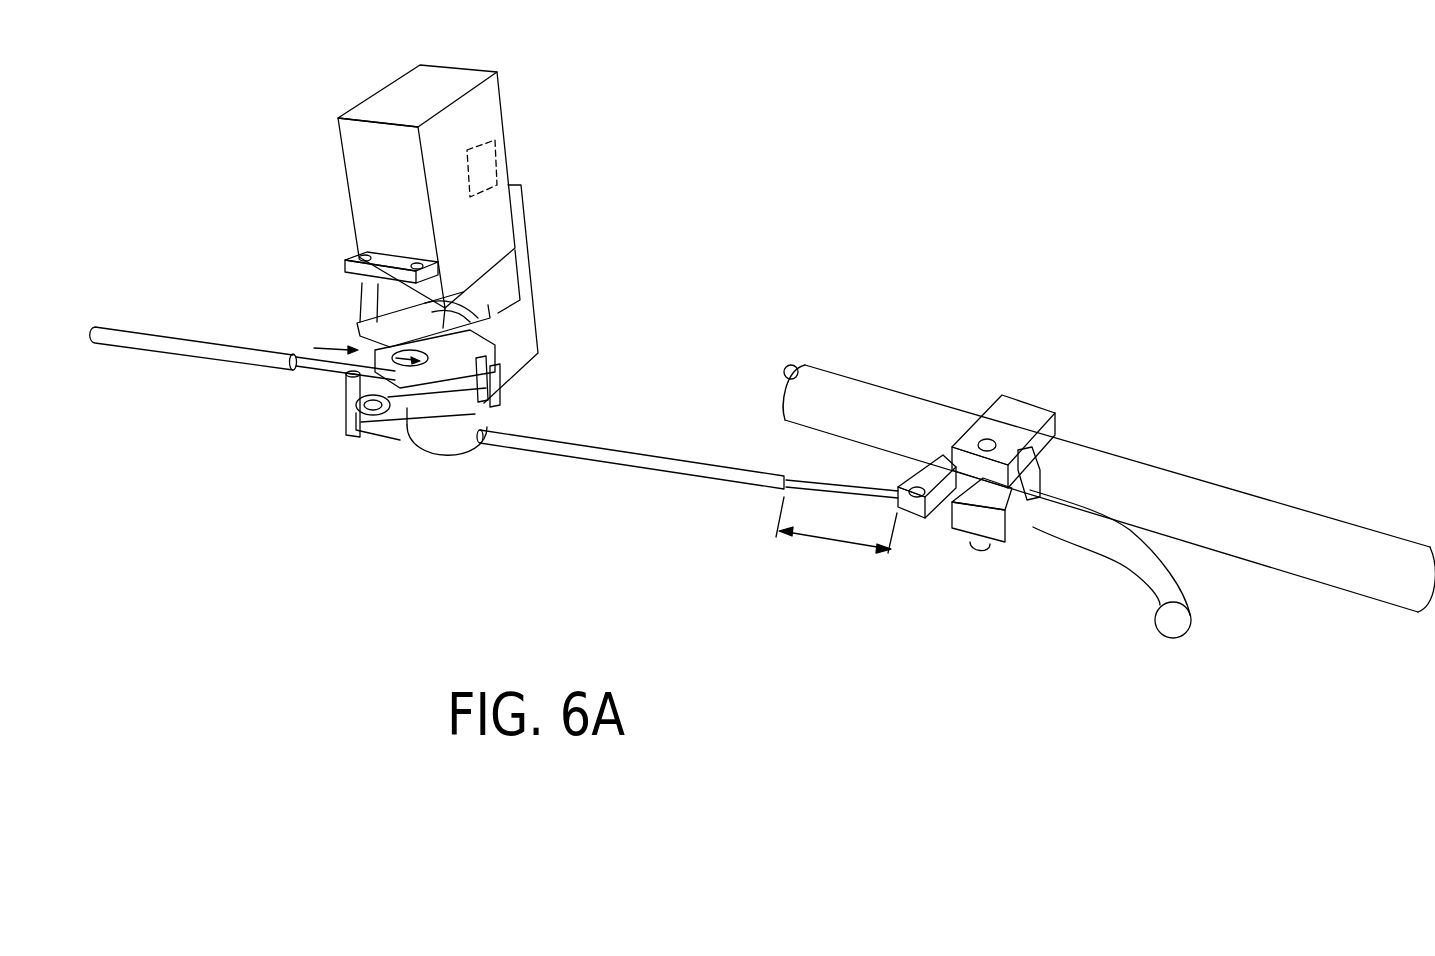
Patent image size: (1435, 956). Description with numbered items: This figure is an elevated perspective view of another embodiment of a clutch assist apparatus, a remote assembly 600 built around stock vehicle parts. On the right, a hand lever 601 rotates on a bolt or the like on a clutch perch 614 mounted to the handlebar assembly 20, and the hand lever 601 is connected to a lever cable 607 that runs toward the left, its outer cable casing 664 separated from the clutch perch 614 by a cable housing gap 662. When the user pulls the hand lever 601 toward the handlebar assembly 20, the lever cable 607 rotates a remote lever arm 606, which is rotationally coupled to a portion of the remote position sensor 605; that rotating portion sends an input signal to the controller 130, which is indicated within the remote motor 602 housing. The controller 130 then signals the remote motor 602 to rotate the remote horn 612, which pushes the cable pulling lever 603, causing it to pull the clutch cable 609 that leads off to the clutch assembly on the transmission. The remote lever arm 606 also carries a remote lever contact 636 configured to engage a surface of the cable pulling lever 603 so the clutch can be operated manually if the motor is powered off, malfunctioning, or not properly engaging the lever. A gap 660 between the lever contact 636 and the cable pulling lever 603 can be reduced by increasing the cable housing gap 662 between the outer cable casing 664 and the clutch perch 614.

The remote assembly 600 is at (1099, 184).
The remote motor 602 is at (490, 112).
The controller 130 is at (503, 157).
The clutch cable 609 is at (156, 330).
The remote horn 612 is at (385, 322).
The gap 660 is at (373, 342).
The remote lever contact 636 is at (346, 384).
The cable pulling lever 603 is at (472, 392).
The remote lever arm 606 is at (366, 436).
The remote position sensor 605 is at (447, 447).
The outer cable casing 664 is at (619, 452).
The lever cable 607 is at (680, 486).
The cable housing gap 662 is at (836, 551).
The clutch perch 614 is at (1022, 412).
The handlebar assembly 20 is at (1262, 500).
The hand lever 601 is at (1143, 570).